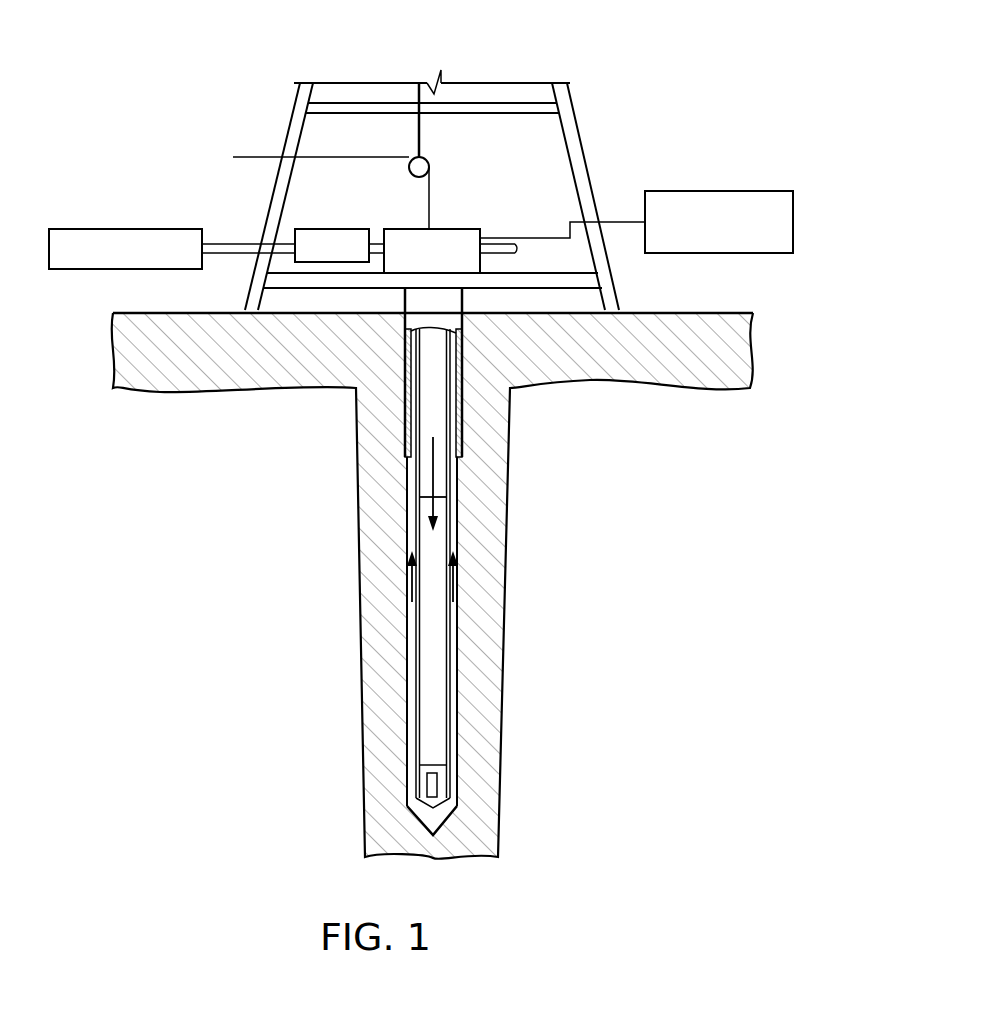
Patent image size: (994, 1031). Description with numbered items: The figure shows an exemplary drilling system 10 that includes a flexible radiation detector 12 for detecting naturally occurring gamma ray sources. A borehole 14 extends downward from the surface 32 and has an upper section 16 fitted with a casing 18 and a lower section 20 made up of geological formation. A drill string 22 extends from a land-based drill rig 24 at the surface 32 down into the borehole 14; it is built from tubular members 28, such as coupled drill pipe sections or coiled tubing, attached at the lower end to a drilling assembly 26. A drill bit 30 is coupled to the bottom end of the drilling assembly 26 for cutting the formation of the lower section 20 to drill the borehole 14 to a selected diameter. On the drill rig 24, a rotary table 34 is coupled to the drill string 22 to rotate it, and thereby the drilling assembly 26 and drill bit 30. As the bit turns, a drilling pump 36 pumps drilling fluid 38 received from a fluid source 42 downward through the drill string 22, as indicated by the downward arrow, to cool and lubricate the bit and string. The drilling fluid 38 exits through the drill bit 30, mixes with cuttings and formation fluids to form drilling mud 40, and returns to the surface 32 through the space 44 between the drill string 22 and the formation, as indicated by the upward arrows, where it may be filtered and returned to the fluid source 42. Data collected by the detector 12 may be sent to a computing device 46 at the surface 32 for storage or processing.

The drilling system 10 is at (620, 46).
The flexible radiation detector 12 is at (445, 790).
The borehole 14 is at (452, 553).
The upper section 16 is at (375, 419).
The casing 18 is at (461, 423).
The lower section 20 is at (335, 660).
The drill string 22 is at (452, 625).
The drill rig 24 is at (588, 178).
The drilling assembly 26 is at (418, 782).
The tubular members 28 is at (453, 510).
The drill bit 30 is at (418, 827).
The surface 32 is at (702, 313).
The rotary table 34 is at (465, 229).
The drilling pump 36 is at (336, 229).
The drilling fluid 38 is at (410, 470).
The drilling mud 40 is at (410, 582).
The fluid source 42 is at (127, 229).
The space 44 is at (453, 530).
The computing device 46 is at (718, 191).